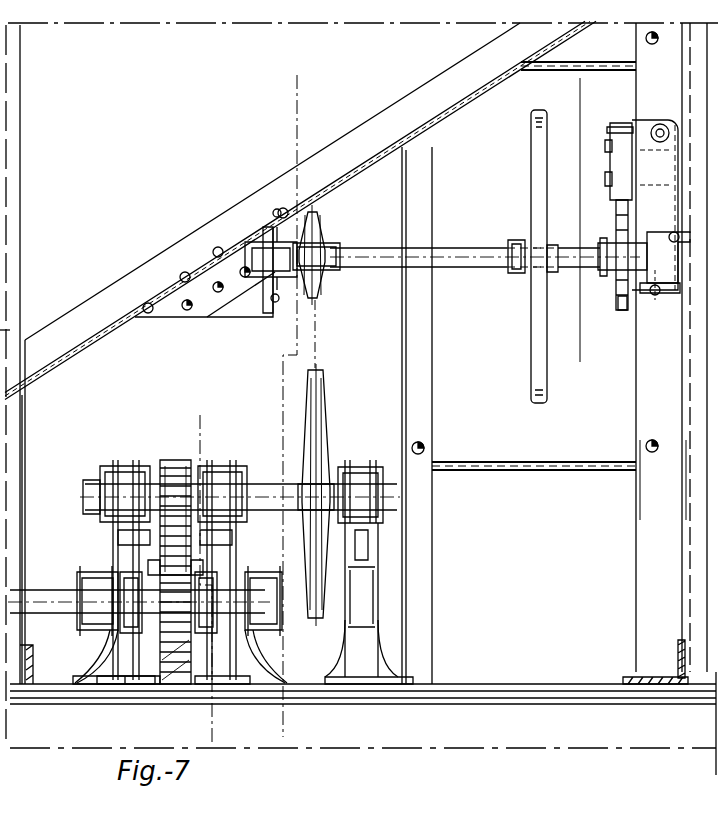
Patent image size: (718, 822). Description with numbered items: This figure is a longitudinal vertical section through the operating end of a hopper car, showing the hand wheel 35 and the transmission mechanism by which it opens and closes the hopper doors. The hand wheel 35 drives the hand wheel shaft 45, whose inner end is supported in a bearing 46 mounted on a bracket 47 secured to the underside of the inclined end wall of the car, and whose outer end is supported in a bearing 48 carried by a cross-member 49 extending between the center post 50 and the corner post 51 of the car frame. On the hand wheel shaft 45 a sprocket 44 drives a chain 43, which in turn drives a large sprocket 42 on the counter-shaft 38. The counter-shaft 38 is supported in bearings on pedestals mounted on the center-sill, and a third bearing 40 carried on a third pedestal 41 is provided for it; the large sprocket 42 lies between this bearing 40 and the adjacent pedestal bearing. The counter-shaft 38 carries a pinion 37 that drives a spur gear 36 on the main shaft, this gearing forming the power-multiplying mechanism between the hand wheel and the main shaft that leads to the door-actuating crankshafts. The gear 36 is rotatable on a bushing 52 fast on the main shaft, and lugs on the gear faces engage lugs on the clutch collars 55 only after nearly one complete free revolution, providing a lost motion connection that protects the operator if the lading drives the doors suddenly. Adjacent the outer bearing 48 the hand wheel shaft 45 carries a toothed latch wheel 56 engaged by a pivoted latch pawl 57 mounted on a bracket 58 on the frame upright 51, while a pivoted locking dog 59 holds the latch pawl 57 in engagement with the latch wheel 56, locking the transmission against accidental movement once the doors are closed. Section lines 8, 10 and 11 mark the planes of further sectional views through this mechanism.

The section line 8- 8 is at (180, 433).
The section line 10- 10 is at (594, 88).
The section line 11- 11 is at (308, 88).
The hand wheel 35 is at (531, 313).
The spur gear 36 is at (158, 684).
The pinion 37 is at (177, 475).
The counter-shaft 38 is at (265, 492).
The third bearing 40 is at (352, 467).
The third pedestal 41 is at (363, 553).
The large sprocket 42 is at (322, 398).
The chain 43 is at (318, 323).
The sprocket 44 is at (322, 248).
The hand wheel shaft 45 is at (456, 262).
The bearing 46 is at (263, 298).
The bracket 47 is at (245, 300).
The bearing 48 is at (653, 295).
The cross-member 49 is at (673, 293).
The center post 50 is at (686, 480).
The corner post 51 is at (644, 507).
The bushing 52 is at (182, 687).
The clutch collars 55 is at (122, 678).
The toothed latch wheel 56 is at (622, 310).
The latch pawl 57 is at (622, 190).
The bracket 58 is at (662, 175).
The locking dog 59 is at (627, 127).